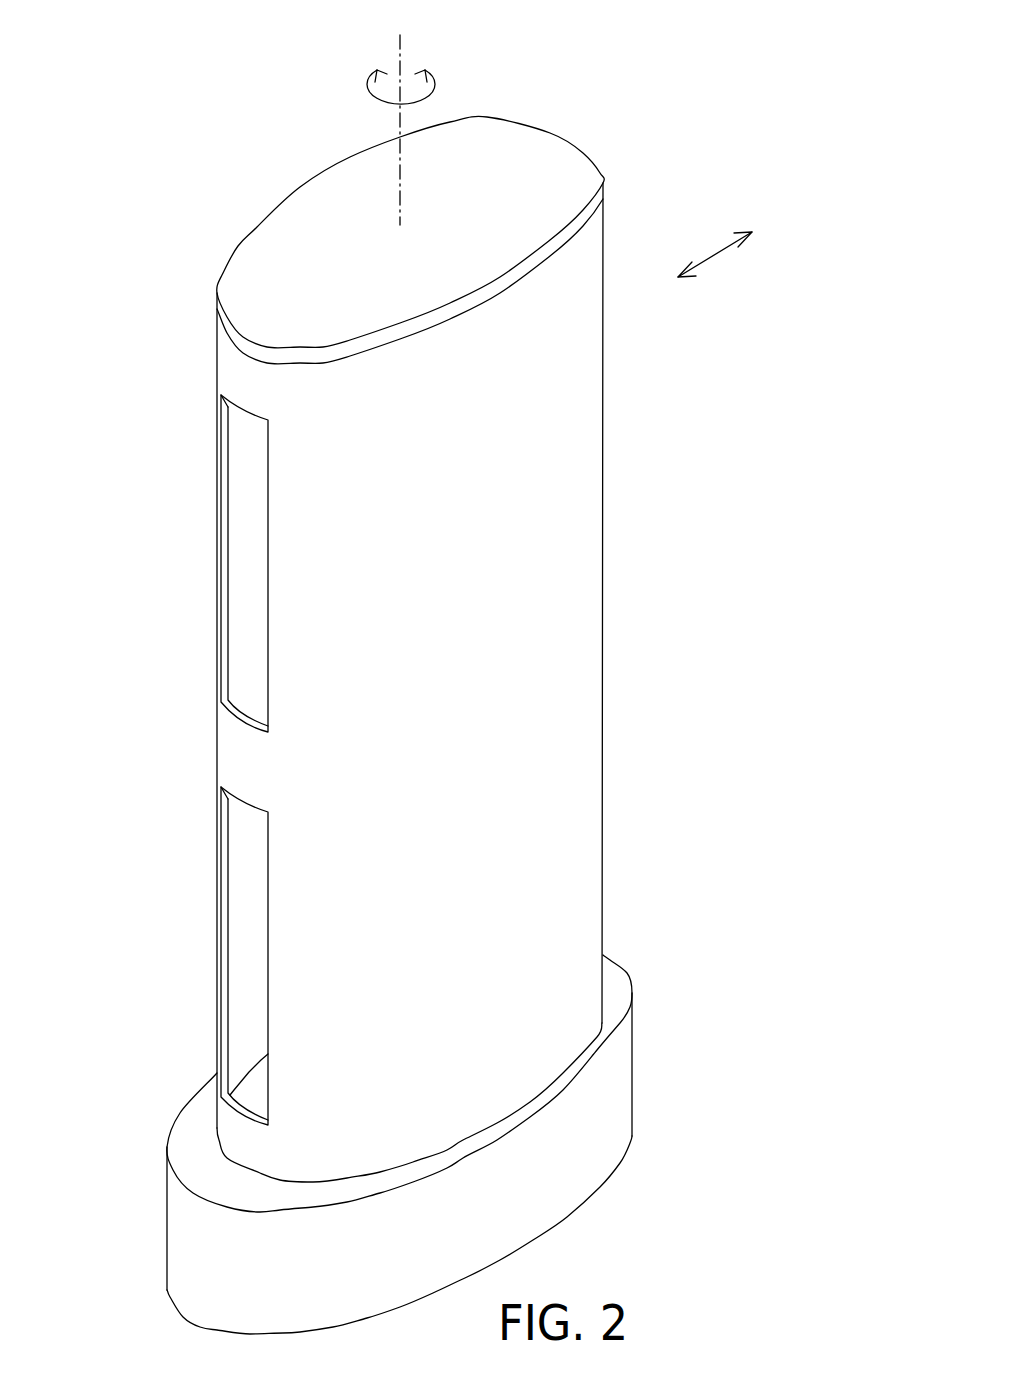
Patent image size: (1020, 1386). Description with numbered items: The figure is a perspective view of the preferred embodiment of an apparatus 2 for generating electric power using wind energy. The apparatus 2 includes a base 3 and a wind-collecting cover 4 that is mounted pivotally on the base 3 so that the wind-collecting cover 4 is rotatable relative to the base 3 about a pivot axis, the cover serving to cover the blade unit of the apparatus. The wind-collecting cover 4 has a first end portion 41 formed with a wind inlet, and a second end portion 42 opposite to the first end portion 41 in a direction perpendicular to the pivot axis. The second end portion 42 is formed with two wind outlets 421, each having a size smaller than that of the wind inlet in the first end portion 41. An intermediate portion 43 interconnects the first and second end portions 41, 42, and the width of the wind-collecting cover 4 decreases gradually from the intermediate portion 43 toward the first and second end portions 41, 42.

The apparatus for generating electric power using wind energy 2 is at (228, 152).
The base 3 is at (152, 1236).
The wind-collecting cover 4 is at (618, 692).
The first end portion 41 is at (570, 153).
The second end portion 42 is at (234, 306).
The wind outlets 421 is at (236, 641).
The intermediate portion 43 is at (379, 201).